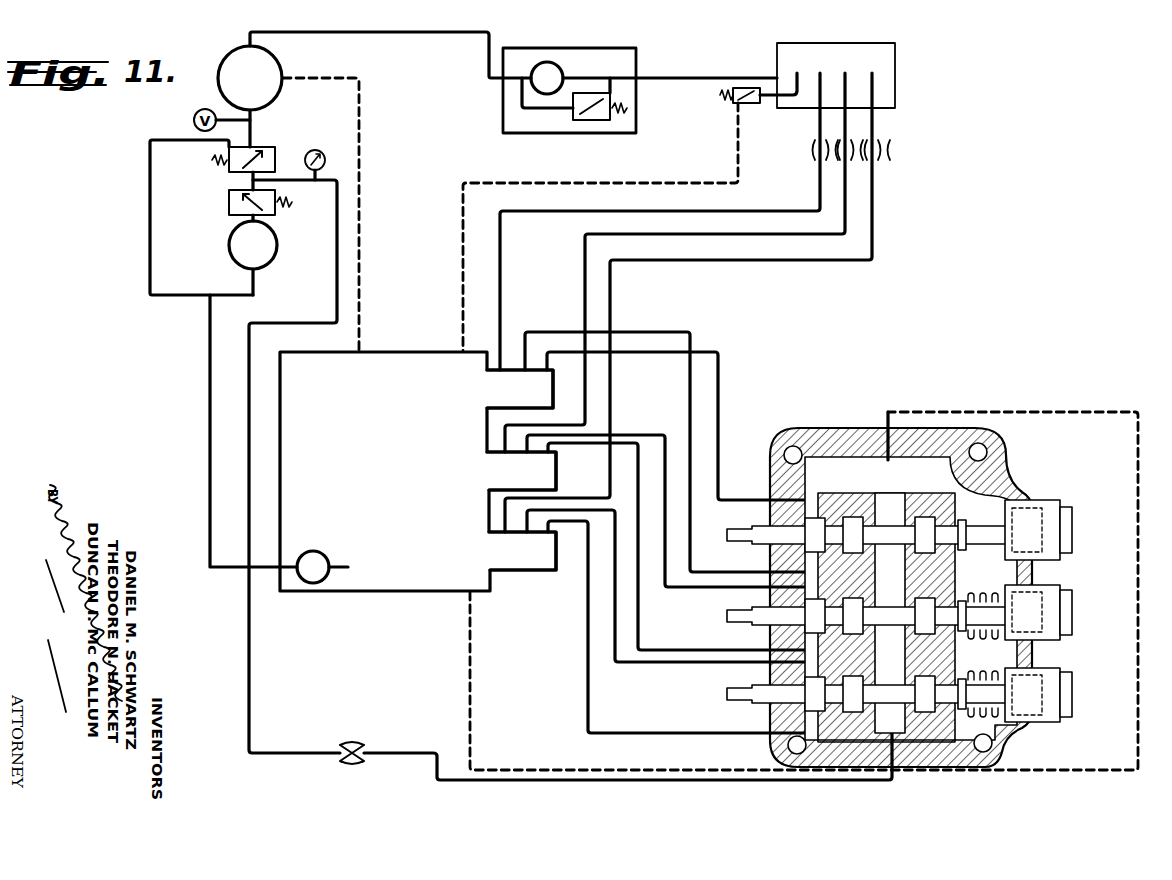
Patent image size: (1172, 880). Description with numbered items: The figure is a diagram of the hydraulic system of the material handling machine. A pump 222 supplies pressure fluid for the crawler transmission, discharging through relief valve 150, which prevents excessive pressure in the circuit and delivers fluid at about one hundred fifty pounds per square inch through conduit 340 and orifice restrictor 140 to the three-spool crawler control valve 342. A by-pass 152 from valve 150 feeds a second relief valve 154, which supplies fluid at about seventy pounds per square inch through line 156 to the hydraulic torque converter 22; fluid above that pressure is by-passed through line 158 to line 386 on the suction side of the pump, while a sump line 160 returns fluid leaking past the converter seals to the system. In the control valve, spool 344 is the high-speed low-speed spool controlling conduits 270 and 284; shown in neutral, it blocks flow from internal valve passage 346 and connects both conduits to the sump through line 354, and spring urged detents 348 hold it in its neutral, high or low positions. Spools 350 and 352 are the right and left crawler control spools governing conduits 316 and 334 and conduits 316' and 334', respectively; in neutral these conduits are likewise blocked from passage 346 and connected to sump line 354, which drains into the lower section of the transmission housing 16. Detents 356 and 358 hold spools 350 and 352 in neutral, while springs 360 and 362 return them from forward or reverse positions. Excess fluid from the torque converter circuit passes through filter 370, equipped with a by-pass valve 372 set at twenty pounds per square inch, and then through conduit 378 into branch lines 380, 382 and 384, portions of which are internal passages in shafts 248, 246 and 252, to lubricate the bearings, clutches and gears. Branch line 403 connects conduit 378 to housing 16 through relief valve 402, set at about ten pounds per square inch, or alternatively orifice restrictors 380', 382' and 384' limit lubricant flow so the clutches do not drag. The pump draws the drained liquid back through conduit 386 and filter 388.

The constant mesh hydraulically actuated transmission 16 is at (418, 471).
The hydraulic torque converter 22 is at (270, 74).
The orifice restrictor 140 is at (362, 744).
The relief valve 150 is at (237, 207).
The by-pass 152 is at (245, 179).
The second relief valve 154 is at (282, 156).
The line 156 is at (250, 146).
The line 158 is at (148, 190).
The sump line 160 is at (360, 175).
The pump 222 is at (274, 249).
The shaft 246 is at (521, 471).
The shaft 248 is at (520, 389).
The shaft 252 is at (522, 551).
The conduit 270 is at (632, 329).
The conduit 284 is at (723, 399).
The conduit 316 is at (741, 525).
The conduit 316' is at (741, 603).
The conduit 334 is at (751, 546).
The conduit 334' is at (714, 627).
The conduit 340 is at (257, 665).
The crawler control valve 342 is at (1060, 452).
The valve spool 344 is at (728, 541).
The internal valve passage 346 is at (894, 613).
The spring urged detents 348 is at (1064, 509).
The valve spool 350 is at (736, 626).
The valve spool 352 is at (750, 696).
The sump line 354 is at (472, 657).
The spring urged detents 356 is at (1064, 617).
The spring urged detents 358 is at (1064, 680).
The valve spool spring 360 is at (1000, 572).
The valve spool spring 362 is at (1004, 658).
The filter 370 is at (545, 64).
The by-pass valve 372 is at (600, 122).
The conduit 378 is at (660, 71).
The branch line 380 is at (660, 221).
The orifice restrictor 380' is at (795, 151).
The branch line 382 is at (675, 262).
The orifice restrictor 382' is at (900, 167).
The branch line 384 is at (688, 302).
The orifice restrictor 384' is at (916, 149).
The conduit 386 is at (208, 386).
The filter 388 is at (322, 552).
The relief valve 402 is at (722, 88).
The branch line 403 is at (460, 253).